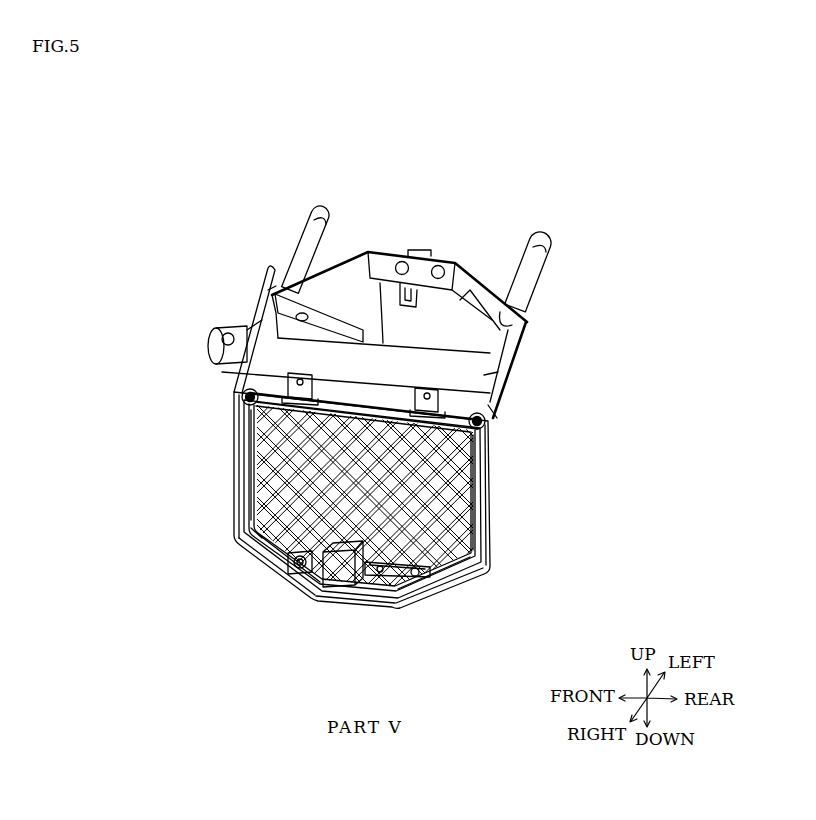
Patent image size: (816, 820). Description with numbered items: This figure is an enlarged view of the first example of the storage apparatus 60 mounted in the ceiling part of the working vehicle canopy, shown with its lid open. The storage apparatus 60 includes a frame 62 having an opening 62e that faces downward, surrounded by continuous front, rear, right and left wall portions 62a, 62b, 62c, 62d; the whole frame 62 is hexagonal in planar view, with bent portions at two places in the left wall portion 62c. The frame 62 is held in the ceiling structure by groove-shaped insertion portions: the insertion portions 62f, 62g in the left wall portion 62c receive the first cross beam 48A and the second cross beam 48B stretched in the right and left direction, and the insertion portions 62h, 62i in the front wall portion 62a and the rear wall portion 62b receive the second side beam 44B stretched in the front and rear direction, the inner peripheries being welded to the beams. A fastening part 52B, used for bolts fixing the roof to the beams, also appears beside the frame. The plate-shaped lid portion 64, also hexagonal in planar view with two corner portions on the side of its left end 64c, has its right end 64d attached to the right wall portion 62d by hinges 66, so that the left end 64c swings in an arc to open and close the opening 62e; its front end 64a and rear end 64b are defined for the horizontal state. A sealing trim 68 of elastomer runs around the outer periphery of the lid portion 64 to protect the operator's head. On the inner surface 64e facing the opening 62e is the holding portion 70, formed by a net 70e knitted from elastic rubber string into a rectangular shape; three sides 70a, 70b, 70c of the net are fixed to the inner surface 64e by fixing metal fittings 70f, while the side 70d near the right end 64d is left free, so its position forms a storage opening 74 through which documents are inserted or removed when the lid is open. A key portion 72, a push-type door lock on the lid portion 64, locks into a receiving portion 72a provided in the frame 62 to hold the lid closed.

The storage apparatus 60 is at (462, 220).
The frame 62 is at (375, 250).
The front wall portion 62a is at (262, 318).
The rear wall portion 62b is at (508, 363).
The left wall portion 62c is at (346, 256).
The right wall portion 62d is at (493, 408).
The opening 62e is at (422, 328).
The insertion portion 62f is at (272, 285).
The insertion portion 62g is at (515, 302).
The insertion portion 62h is at (243, 328).
The insertion portion 62i is at (488, 385).
The lid portion 64 is at (296, 592).
The front end 64a is at (240, 440).
The rear end 64b is at (492, 492).
The left end 64c is at (397, 610).
The right end 64d is at (240, 388).
The inner surface 64e is at (490, 577).
The hinges 66 is at (246, 398).
The sealing trim 68 is at (262, 562).
The holding portion 70 is at (310, 492).
The side of net 70a is at (250, 465).
The side of net 70b is at (480, 538).
The side of net 70c is at (398, 594).
The side of net 70d is at (248, 426).
The net 70e is at (250, 540).
The fixing metal fittings 70f is at (245, 552).
The key portion 72 is at (352, 600).
The receiving portion 72a is at (420, 253).
The storage opening 74 is at (372, 392).
The second side beam 44B is at (211, 347).
The first cross beam 48A is at (297, 222).
The second cross beam 48B is at (538, 268).
The fastening part 52B is at (290, 303).